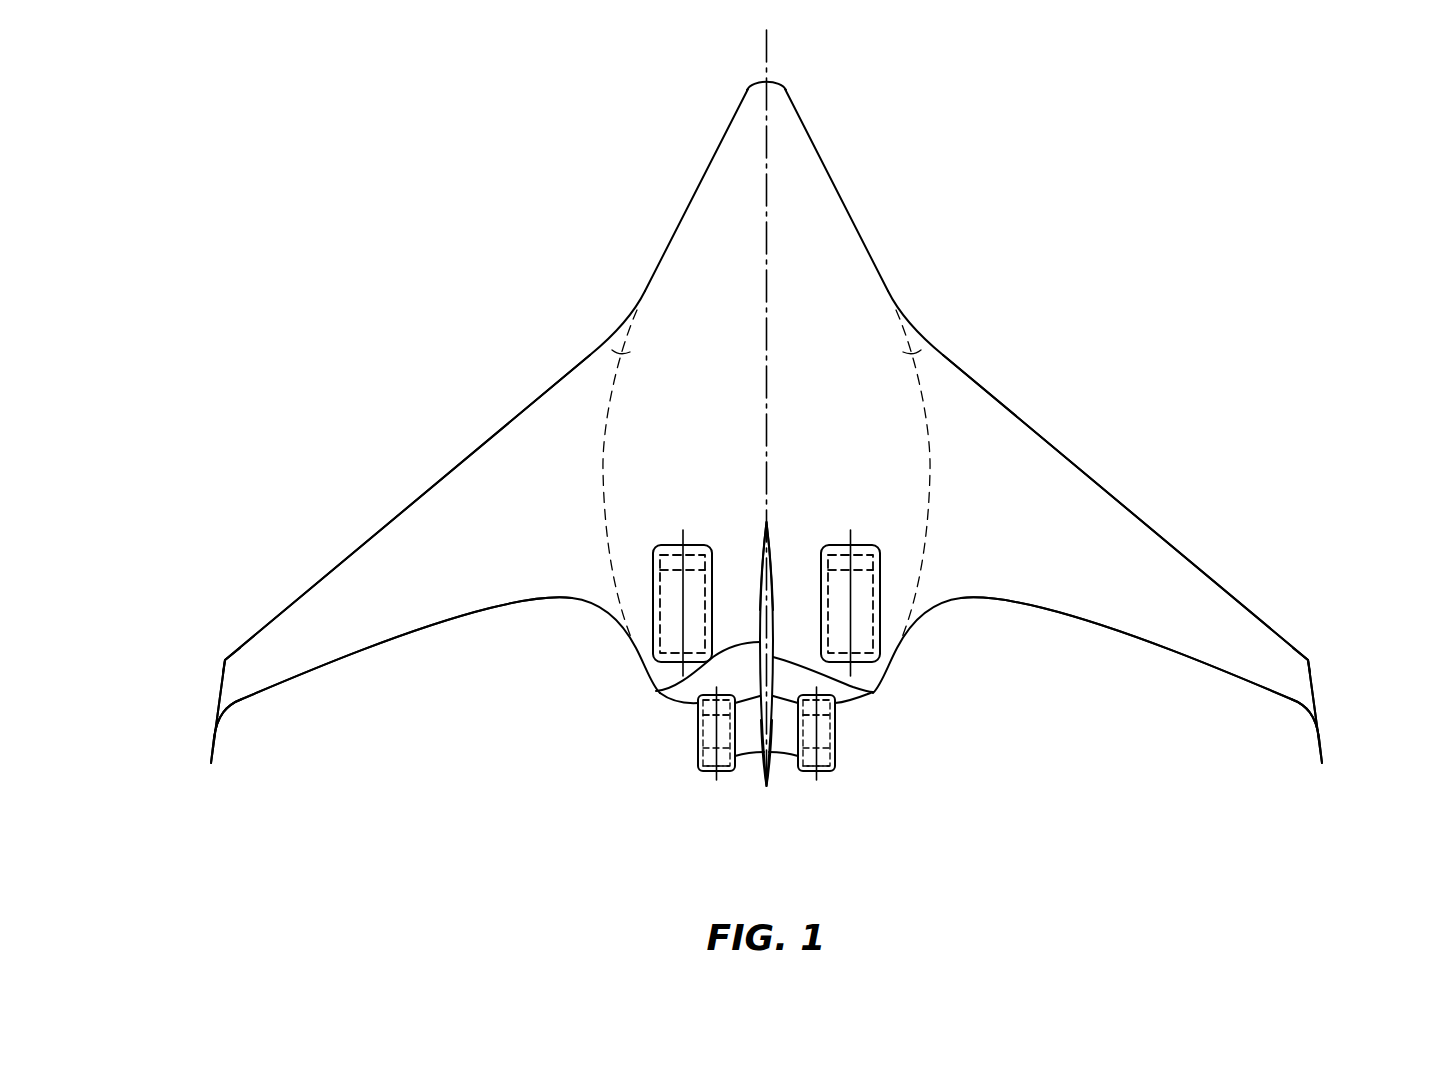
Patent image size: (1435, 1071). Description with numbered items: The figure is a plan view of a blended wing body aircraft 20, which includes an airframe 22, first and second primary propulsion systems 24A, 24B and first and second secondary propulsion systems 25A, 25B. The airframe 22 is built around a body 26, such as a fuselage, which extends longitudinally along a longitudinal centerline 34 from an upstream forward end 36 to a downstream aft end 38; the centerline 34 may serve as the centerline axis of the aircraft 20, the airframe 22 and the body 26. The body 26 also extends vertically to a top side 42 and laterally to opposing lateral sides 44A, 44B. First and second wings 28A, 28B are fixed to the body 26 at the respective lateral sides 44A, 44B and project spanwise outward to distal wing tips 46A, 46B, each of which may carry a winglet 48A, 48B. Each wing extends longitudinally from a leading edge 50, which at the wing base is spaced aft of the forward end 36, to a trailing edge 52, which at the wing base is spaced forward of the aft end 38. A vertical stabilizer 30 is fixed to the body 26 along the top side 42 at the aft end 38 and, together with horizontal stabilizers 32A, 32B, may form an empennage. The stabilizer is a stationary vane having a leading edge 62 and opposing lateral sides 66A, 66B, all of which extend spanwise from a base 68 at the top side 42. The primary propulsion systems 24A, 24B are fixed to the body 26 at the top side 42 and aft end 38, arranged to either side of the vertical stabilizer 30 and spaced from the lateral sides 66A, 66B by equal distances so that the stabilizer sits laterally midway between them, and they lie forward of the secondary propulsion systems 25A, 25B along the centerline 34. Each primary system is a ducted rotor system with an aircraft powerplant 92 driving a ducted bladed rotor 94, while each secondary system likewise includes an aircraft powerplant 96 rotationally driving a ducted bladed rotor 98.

The blended wing body aircraft 20 is at (1153, 214).
The airframe 22 is at (895, 248).
The first primary propulsion system 24A is at (872, 535).
The second primary propulsion system 24B is at (717, 535).
The first secondary propulsion system 25A is at (847, 777).
The second secondary propulsion system 25B is at (686, 777).
The body 26 is at (662, 249).
The first wing 28A is at (1125, 503).
The second wing 28B is at (409, 503).
The vertical stabilizer 30 is at (780, 594).
The first horizontal stabilizer 32A is at (788, 762).
The second horizontal stabilizer 32B is at (745, 762).
The longitudinal centerline 34 is at (768, 306).
The forward end 36 is at (768, 79).
The aft end 38 is at (866, 696).
The top side 42 is at (828, 385).
The first lateral side 44A is at (925, 344).
The second lateral side 44B is at (608, 344).
The first wing tip 46A is at (1309, 661).
The second wing tip 46B is at (224, 661).
The first winglet 48A is at (1327, 726).
The second winglet 48B is at (206, 730).
The wing leading edge 50 is at (346, 556).
The wing trailing edge 52 is at (388, 640).
The vertical stabilizer leading edge 62 is at (766, 520).
The vertical stabilizer first lateral side 66A is at (875, 692).
The vertical stabilizer second lateral side 66B is at (660, 693).
The vertical stabilizer base 68 is at (766, 788).
The aircraft powerplant 92 is at (655, 615).
The ducted bladed rotor 94 is at (653, 562).
The aircraft powerplant 96 is at (698, 748).
The ducted bladed rotor 98 is at (698, 710).